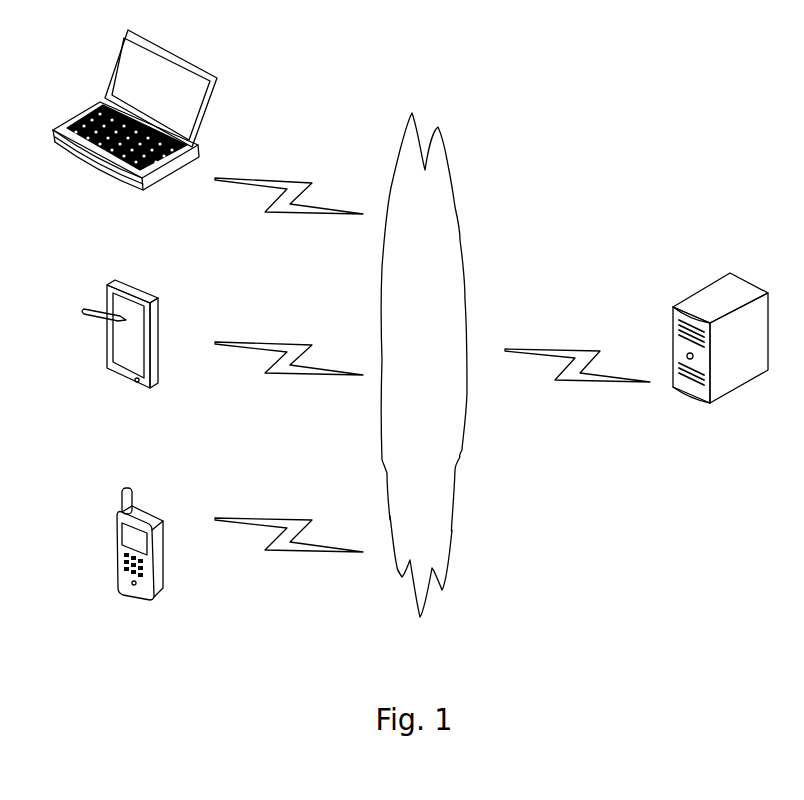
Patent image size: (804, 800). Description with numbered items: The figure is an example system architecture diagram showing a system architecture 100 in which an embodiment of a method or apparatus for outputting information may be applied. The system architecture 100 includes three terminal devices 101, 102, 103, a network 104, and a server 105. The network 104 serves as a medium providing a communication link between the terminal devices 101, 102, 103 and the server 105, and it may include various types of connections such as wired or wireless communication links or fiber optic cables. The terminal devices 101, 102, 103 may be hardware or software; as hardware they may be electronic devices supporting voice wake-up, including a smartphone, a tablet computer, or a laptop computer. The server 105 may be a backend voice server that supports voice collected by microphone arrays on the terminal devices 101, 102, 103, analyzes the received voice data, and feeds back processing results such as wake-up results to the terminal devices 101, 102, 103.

The system architecture 100 is at (676, 21).
The terminal device 101 is at (140, 563).
The terminal device 102 is at (120, 355).
The terminal device 103 is at (135, 129).
The network 104 is at (424, 365).
The server 105 is at (720, 361).